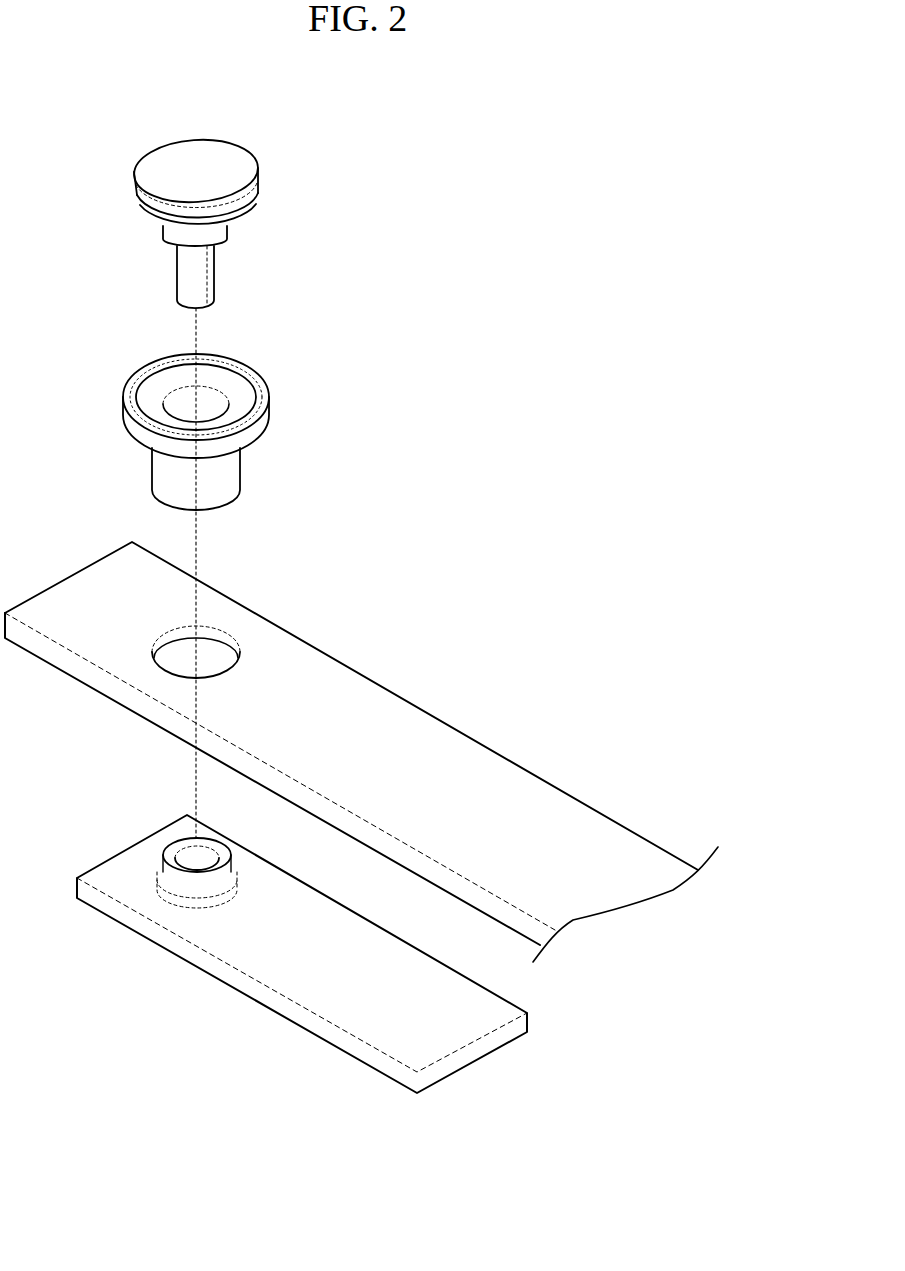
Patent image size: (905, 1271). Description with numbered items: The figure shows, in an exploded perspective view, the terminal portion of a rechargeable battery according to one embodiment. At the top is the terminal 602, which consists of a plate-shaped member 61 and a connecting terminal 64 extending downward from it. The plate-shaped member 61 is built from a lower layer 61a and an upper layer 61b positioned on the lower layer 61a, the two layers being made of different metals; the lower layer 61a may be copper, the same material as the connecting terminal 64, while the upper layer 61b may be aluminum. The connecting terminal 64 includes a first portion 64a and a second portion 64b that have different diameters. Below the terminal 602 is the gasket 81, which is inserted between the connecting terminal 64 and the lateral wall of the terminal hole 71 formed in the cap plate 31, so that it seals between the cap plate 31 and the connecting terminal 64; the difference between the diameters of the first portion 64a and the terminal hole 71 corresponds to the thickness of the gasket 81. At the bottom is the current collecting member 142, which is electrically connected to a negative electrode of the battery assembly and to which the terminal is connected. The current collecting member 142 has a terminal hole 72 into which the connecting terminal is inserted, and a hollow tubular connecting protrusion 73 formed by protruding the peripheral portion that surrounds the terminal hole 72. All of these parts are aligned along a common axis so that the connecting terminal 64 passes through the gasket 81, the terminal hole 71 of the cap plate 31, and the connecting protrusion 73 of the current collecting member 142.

The terminal 602 is at (288, 222).
The plate-shaped member 61 is at (261, 180).
The upper layer 61b is at (245, 174).
The lower layer 61a is at (252, 211).
The connecting terminal 64 is at (277, 267).
The first portion 64a is at (222, 231).
The second portion 64b is at (210, 276).
The gasket 81 is at (258, 400).
The terminal hole 71 is at (226, 646).
The cap plate 31 is at (361, 749).
The terminal hole 72 is at (187, 860).
The connecting protrusion 73 is at (197, 888).
The current collecting member 142 is at (302, 942).